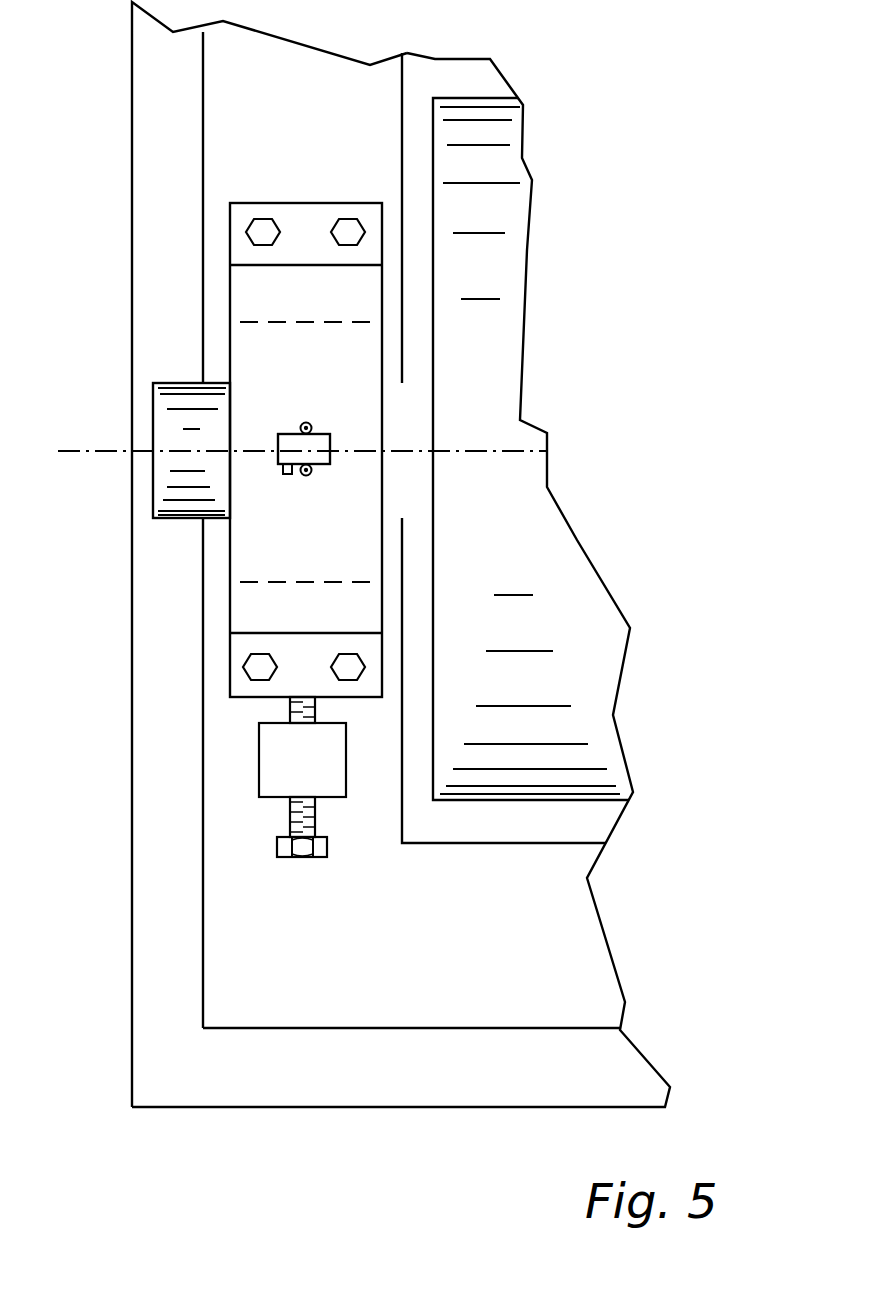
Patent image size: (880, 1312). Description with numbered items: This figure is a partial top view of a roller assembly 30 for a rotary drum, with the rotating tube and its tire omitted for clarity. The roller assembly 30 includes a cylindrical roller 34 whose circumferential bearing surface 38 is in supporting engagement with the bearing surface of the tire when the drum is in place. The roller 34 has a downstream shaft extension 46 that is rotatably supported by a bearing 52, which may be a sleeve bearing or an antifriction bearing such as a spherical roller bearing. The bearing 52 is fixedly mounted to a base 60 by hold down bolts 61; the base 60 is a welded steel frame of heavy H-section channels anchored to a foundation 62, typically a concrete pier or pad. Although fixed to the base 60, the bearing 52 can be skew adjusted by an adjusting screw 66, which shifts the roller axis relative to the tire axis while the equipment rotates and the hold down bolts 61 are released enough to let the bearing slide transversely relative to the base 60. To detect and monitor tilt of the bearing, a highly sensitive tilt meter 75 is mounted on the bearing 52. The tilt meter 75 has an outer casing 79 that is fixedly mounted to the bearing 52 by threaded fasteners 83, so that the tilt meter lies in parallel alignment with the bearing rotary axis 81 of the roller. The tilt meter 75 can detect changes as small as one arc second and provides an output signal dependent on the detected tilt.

The roller assembly 30 is at (93, 203).
The cylindrical roller 34 is at (508, 339).
The circumferential bearing surface 38 is at (494, 510).
The downstream shaft extension 46 is at (177, 498).
The bearing 52 is at (245, 333).
The base 60 is at (424, 1080).
The hold down bolts 61 is at (346, 230).
The foundation 62 is at (471, 983).
The adjusting screw 66 is at (297, 857).
The tilt meter 75 is at (281, 429).
The outer casing 79 is at (312, 447).
The bearing rotary axis 81 is at (94, 450).
The threaded fasteners 83 is at (312, 422).